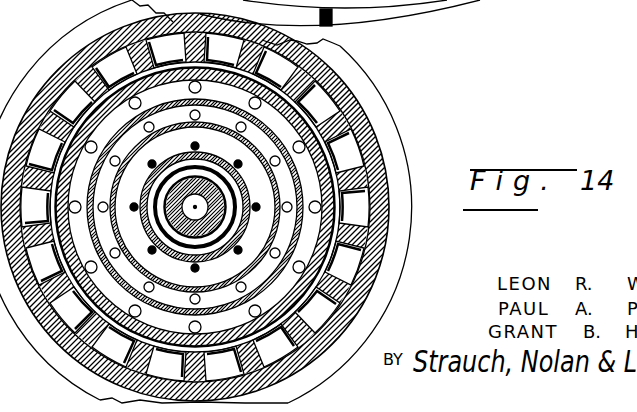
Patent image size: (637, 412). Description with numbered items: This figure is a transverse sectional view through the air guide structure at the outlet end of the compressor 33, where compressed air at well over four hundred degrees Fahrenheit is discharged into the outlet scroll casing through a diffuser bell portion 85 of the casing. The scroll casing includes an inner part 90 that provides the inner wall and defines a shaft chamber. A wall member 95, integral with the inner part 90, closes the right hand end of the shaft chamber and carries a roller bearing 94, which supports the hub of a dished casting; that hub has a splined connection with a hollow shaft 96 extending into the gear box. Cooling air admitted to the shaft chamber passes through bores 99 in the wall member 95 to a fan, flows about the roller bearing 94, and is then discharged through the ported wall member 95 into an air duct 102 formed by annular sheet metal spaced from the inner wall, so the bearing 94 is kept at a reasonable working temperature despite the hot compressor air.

The compressor 33 is at (358, 78).
The diffuser bell portion 85 is at (343, 112).
The inner part 90 is at (320, 160).
The wall member 95 is at (309, 254).
The bores 99 is at (272, 250).
The air duct 102 is at (167, 118).
The roller bearing 94 is at (142, 200).
The hollow shaft 96 is at (200, 183).